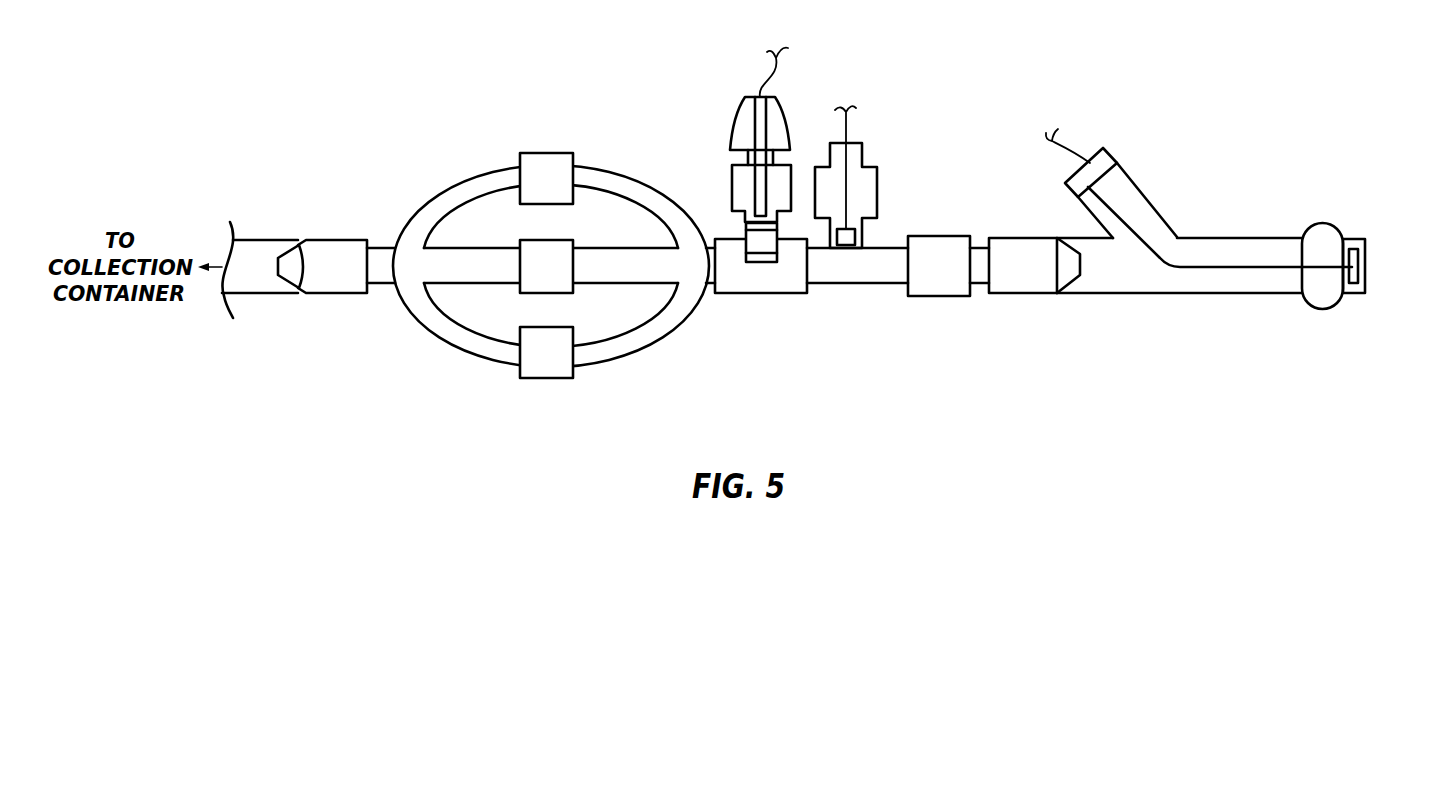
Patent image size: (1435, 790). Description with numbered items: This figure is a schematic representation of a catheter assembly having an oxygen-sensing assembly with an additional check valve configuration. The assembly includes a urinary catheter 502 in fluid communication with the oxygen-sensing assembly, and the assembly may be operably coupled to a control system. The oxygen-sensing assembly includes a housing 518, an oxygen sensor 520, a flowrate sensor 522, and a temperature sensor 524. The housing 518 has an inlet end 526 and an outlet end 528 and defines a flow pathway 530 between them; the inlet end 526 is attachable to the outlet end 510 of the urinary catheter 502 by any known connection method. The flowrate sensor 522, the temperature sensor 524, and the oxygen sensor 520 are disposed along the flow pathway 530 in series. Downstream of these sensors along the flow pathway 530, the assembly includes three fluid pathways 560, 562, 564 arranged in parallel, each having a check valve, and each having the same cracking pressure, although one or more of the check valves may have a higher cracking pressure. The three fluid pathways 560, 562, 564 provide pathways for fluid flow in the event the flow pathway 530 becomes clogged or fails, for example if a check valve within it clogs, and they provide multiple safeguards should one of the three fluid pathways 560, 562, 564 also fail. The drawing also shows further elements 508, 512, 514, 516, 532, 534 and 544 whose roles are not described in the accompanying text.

The urinary catheter 502 is at (1163, 293).
The distal tip 508 is at (1367, 247).
The outlet end of the urinary catheter 510 is at (1057, 293).
The inner tube 512 is at (1187, 277).
The balloon 514 is at (1322, 224).
The guidewire branch port 516 is at (1103, 152).
The housing 518 is at (808, 288).
The oxygen sensor 520 is at (708, 185).
The flowrate sensor 522 is at (935, 298).
The temperature sensor 524 is at (860, 236).
The inlet end 526 is at (1083, 265).
The outlet end 528 is at (277, 274).
The flow pathway 530 is at (774, 283).
The plunger actuator 532 is at (762, 105).
The seal 534 is at (762, 258).
The aperture 544 is at (1354, 273).
The fluid pathway 560 is at (592, 165).
The fluid pathway 562 is at (590, 248).
The fluid pathway 564 is at (592, 333).